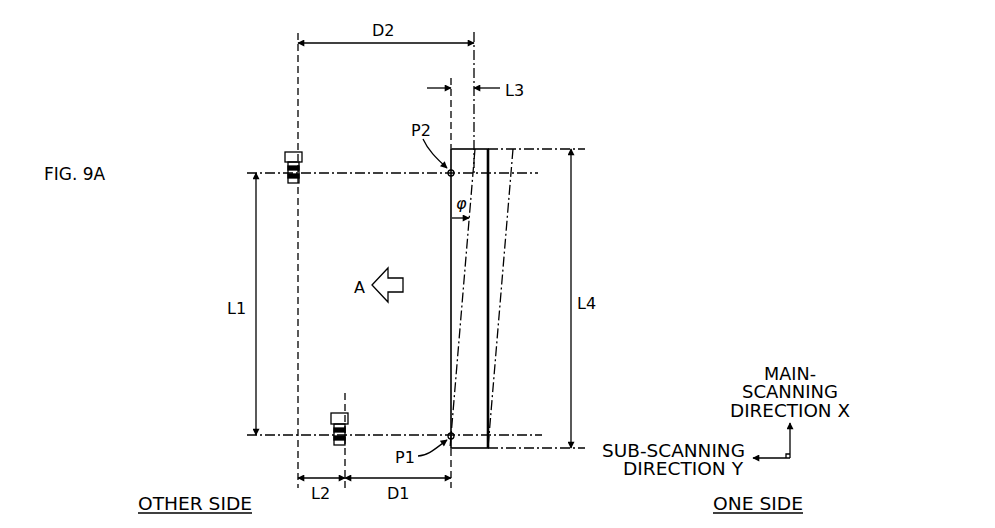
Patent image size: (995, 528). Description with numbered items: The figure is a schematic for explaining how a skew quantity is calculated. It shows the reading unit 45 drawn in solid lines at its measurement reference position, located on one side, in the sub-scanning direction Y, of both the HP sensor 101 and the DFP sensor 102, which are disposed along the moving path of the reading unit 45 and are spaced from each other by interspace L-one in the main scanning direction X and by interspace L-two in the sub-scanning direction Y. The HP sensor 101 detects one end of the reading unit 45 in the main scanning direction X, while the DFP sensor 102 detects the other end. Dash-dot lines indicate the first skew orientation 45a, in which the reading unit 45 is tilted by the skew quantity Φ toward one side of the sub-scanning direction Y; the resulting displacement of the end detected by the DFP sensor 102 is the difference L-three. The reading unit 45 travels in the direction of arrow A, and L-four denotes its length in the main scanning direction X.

The reading unit 45 is at (489, 218).
The first skew orientation 45a is at (505, 253).
The HP sensor 101 is at (337, 413).
The DFP sensor 102 is at (285, 153).